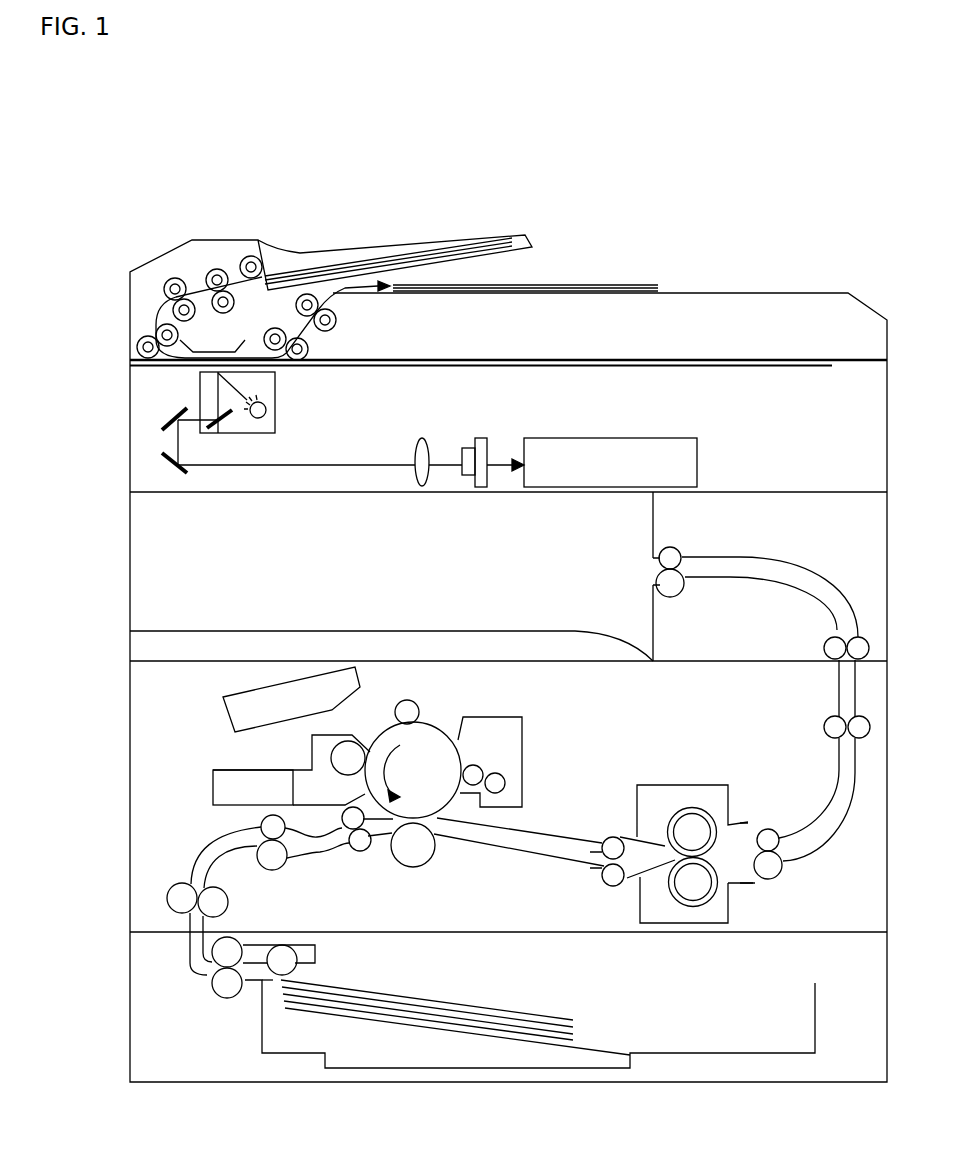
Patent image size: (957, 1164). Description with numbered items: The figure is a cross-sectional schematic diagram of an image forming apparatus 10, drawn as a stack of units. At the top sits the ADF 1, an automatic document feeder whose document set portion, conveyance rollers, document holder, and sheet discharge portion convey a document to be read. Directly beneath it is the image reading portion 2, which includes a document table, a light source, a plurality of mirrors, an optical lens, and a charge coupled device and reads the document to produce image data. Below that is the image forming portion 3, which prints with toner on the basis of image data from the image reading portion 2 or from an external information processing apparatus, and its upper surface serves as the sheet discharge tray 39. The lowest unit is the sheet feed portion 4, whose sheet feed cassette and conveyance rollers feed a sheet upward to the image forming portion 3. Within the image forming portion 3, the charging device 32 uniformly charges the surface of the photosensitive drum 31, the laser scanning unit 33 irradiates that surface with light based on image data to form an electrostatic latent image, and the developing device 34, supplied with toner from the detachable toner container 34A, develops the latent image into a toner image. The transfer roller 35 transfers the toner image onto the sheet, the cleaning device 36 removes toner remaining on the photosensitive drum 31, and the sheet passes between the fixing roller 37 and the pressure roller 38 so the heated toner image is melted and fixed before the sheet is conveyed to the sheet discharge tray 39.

The image forming apparatus 10 is at (117, 197).
The ADF 1 is at (130, 298).
The image reading portion 2 is at (130, 440).
The image forming portion 3 is at (150, 683).
The sheet feed portion 4 is at (130, 1008).
The photosensitive drum 31 is at (447, 727).
The charging device 32 is at (395, 710).
The laser scanning unit 33 is at (222, 718).
The developing device 34 is at (312, 747).
The toner container 34A is at (213, 798).
The transfer roller 35 is at (415, 867).
The cleaning device 36 is at (497, 716).
The fixing roller 37 is at (693, 806).
The pressure roller 38 is at (692, 930).
The sheet discharge tray 39 is at (533, 630).